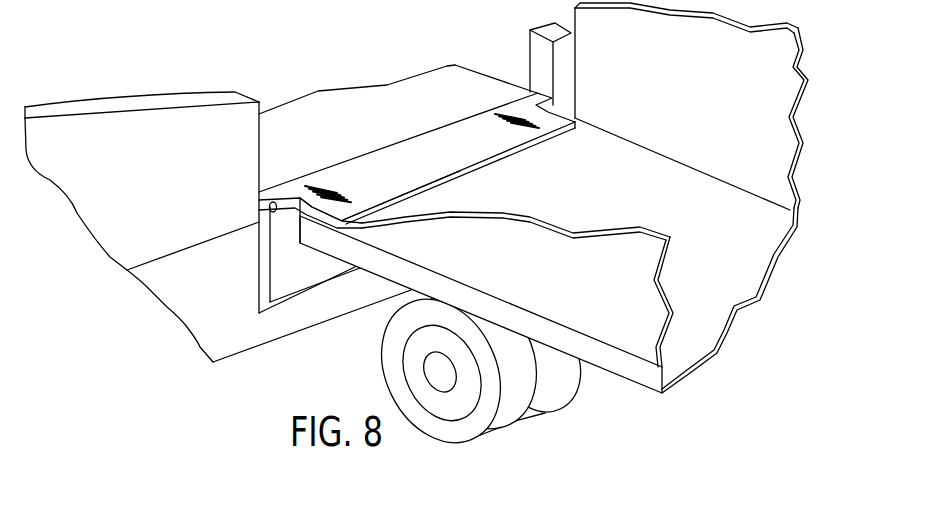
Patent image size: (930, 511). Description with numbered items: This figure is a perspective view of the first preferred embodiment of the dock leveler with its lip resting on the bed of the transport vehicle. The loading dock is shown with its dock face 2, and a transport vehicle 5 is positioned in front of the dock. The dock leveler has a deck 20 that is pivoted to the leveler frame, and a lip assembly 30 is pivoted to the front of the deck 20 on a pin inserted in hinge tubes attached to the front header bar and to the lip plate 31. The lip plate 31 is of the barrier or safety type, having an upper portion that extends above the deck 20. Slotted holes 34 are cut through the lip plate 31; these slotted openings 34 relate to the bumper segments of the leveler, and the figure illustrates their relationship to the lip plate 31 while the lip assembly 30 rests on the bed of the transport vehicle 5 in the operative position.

The dock face 2 is at (217, 328).
The transport vehicle 5 is at (738, 288).
The deck 20 is at (355, 98).
The lip assembly 30 is at (478, 122).
The lip plate 31 is at (391, 129).
The slotted holes 34 is at (517, 110).